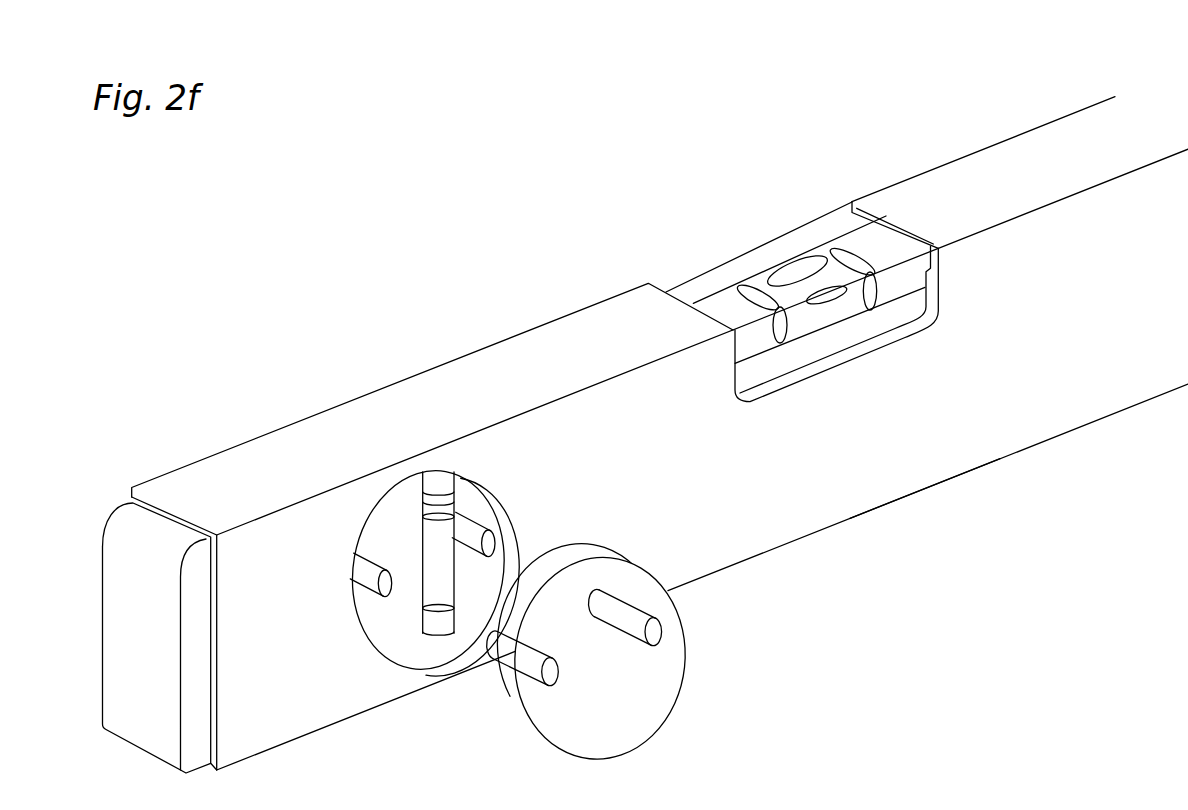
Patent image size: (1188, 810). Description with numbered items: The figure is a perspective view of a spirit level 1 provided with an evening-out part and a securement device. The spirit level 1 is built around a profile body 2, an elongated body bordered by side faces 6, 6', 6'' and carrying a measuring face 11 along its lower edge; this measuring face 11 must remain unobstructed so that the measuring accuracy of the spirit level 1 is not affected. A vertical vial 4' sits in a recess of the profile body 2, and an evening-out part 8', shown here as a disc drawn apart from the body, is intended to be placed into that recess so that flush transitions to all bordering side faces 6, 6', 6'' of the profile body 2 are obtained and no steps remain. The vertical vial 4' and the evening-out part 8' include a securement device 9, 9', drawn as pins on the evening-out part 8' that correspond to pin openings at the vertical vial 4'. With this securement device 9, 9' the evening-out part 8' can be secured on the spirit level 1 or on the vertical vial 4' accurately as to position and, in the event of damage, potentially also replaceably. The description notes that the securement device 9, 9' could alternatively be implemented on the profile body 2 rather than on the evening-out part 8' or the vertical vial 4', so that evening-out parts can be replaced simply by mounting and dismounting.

The spirit level 1 is at (275, 349).
The profile body 2 is at (502, 365).
The vertical vial 4' is at (456, 571).
The side face 6 is at (983, 173).
The side face 6' is at (911, 324).
The side face 6'' is at (821, 208).
The evening-out part 8' is at (596, 656).
The securement device 9 is at (587, 639).
The securement device 9' is at (435, 574).
The measuring face 11 is at (903, 498).